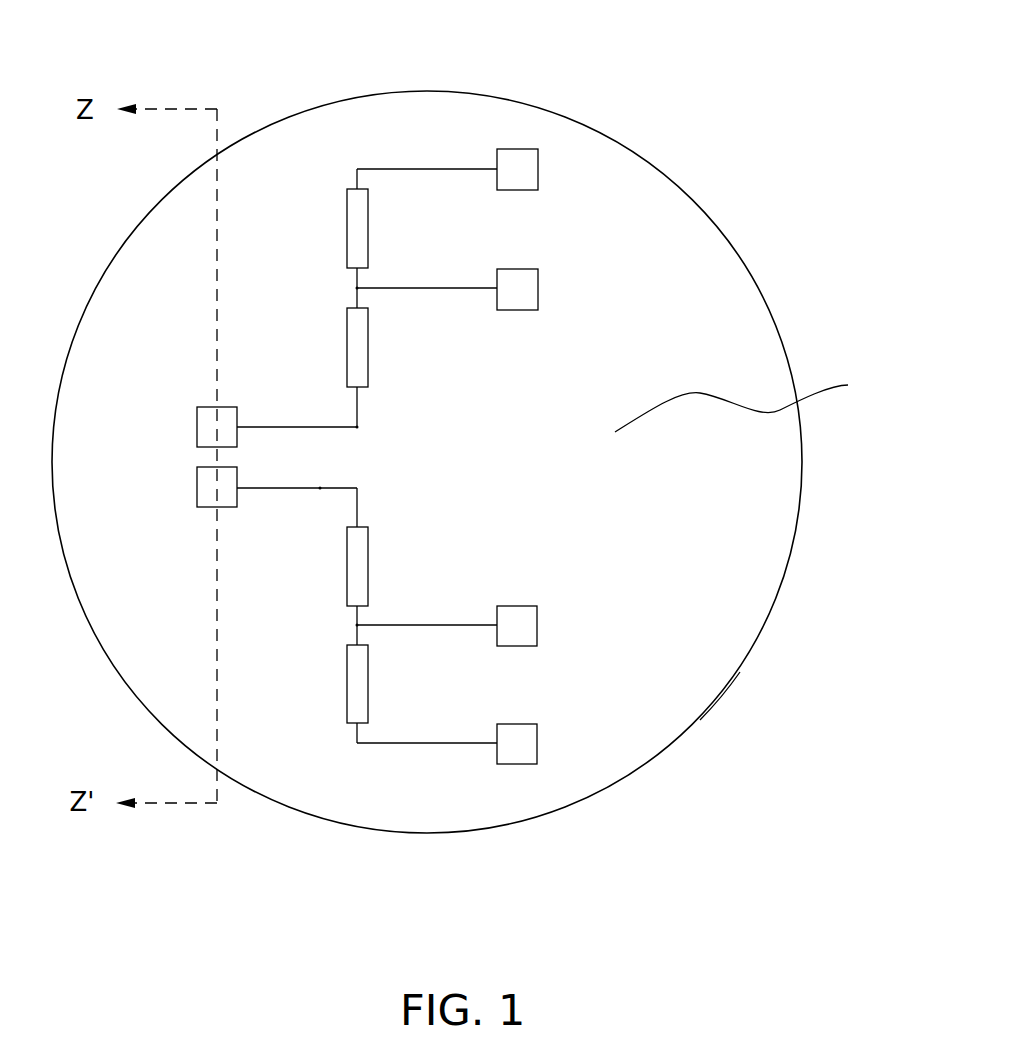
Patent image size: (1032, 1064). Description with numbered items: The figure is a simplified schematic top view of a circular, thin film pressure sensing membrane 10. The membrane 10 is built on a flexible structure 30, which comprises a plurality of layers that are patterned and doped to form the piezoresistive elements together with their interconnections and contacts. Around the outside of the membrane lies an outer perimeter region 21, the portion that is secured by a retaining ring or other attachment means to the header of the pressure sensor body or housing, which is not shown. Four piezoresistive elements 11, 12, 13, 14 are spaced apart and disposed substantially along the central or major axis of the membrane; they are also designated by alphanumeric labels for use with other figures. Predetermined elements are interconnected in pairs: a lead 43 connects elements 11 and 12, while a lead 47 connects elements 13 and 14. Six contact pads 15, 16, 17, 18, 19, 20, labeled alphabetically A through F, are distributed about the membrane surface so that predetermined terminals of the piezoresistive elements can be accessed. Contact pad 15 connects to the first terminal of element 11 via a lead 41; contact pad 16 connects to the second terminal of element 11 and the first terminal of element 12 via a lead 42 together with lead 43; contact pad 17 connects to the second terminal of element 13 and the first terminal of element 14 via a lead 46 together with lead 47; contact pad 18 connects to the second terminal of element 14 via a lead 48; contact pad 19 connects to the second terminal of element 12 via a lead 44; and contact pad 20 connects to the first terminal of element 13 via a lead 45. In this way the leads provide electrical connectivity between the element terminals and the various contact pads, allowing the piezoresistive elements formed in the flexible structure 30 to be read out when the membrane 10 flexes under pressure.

The pressure sensing membrane 10 is at (752, 53).
The piezoresistive element 11 is at (347, 228).
The piezoresistive element 12 is at (347, 345).
The piezoresistive element 13 is at (347, 565).
The piezoresistive element 14 is at (347, 685).
The contact pad 15 is at (538, 190).
The contact pad 16 is at (538, 310).
The contact pad 17 is at (537, 606).
The contact pad 18 is at (537, 724).
The contact pad 19 is at (197, 407).
The contact pad 20 is at (197, 507).
The outer perimeter region 21 is at (740, 672).
The flexible structure 30 is at (754, 401).
The lead 41 is at (430, 169).
The lead 42 is at (428, 288).
The lead 43 is at (357, 288).
The lead 44 is at (357, 427).
The lead 45 is at (320, 488).
The lead 46 is at (428, 625).
The lead 47 is at (357, 625).
The lead 48 is at (425, 743).